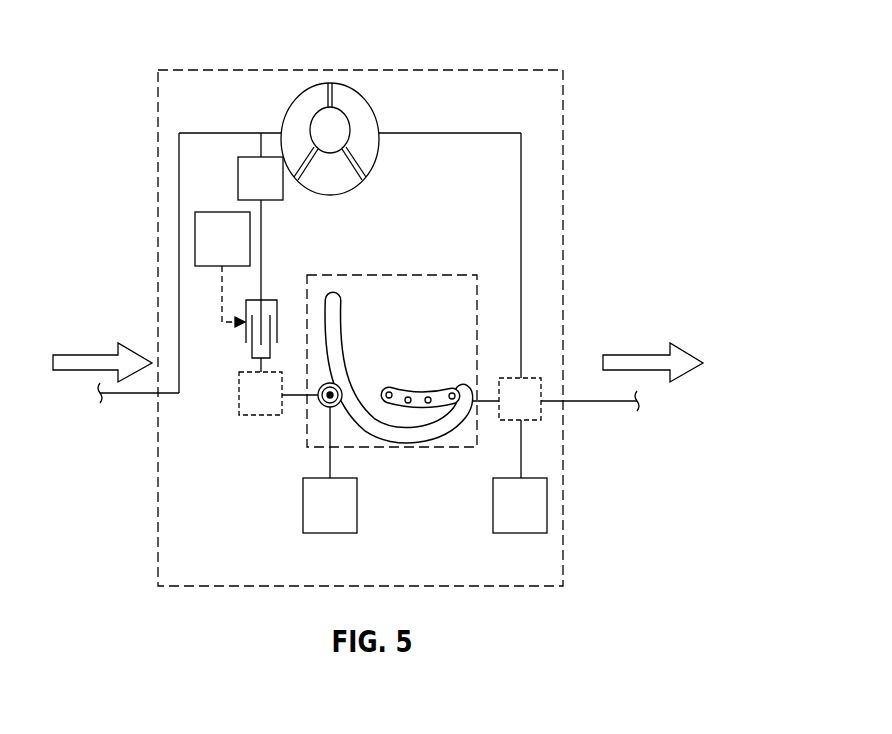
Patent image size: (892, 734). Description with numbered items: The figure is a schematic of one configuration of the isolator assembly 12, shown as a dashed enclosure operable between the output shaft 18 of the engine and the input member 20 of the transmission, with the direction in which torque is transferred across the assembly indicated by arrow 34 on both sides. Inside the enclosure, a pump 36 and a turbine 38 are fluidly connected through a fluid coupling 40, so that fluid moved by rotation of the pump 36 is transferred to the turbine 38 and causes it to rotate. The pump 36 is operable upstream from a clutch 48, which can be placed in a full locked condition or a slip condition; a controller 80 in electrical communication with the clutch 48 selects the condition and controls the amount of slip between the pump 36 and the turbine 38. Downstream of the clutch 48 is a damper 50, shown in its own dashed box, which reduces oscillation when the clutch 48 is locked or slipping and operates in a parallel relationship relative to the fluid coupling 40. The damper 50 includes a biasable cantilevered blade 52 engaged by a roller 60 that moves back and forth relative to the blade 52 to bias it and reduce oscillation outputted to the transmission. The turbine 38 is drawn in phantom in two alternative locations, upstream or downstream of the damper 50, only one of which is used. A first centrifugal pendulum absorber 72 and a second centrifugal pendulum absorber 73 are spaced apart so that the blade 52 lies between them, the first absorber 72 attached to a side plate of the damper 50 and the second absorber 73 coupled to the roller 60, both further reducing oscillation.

The isolator assembly 12 is at (533, 70).
The fluid coupling 40 is at (385, 118).
The pump 36 is at (247, 191).
The controller 80 is at (208, 250).
The clutch 48 is at (243, 351).
The turbine 38 is at (247, 406).
The damper 50 is at (392, 274).
The blade 52 is at (343, 328).
The roller 60 is at (325, 405).
The arrow 34 is at (73, 355).
The output shaft 18 is at (128, 396).
The input member 20 is at (598, 403).
The second centrifugal pendulum absorber 73 is at (316, 518).
The first centrifugal pendulum absorber 72 is at (506, 518).